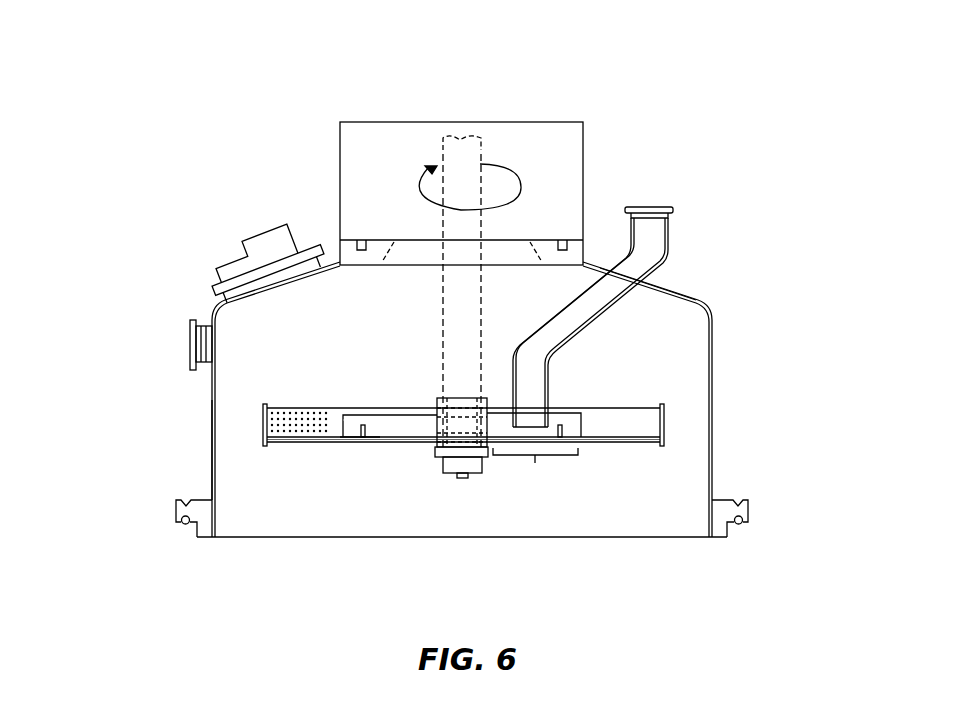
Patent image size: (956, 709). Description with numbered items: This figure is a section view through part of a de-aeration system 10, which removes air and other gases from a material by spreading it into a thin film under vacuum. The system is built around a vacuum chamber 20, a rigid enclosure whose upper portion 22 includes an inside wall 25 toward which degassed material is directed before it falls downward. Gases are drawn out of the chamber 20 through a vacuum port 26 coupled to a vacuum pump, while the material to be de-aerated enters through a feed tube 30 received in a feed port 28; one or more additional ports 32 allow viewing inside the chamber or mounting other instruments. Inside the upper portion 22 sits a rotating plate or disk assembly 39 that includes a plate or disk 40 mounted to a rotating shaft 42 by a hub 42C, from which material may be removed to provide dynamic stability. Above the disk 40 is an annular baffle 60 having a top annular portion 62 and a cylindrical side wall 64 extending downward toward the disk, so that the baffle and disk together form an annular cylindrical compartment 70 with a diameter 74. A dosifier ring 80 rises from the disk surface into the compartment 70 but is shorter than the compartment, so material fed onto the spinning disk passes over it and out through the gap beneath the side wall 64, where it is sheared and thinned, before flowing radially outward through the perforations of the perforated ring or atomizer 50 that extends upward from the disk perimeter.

The de-aeration system 10 is at (262, 100).
The vacuum chamber 20 is at (715, 340).
The upper portion 22 is at (692, 300).
The inside wall 25 is at (222, 478).
The vacuum port 26 is at (190, 345).
The feed port 28 is at (653, 275).
The feed tube 30 is at (650, 210).
The additional port 32 is at (285, 232).
The rotating plate or disk assembly 39 is at (358, 455).
The plate or disk 40 is at (612, 445).
The shaft 42 is at (483, 152).
The hub 42C is at (437, 457).
The perforated ring or atomizer 50 is at (267, 405).
The annular baffle 60 is at (352, 413).
The top annular portion 62 is at (566, 412).
The cylindrical side wall 64 is at (585, 425).
The annular cylindrical compartment 70 is at (400, 424).
The diameter 74 is at (535, 475).
The dosifier ring or wall 80 is at (366, 430).